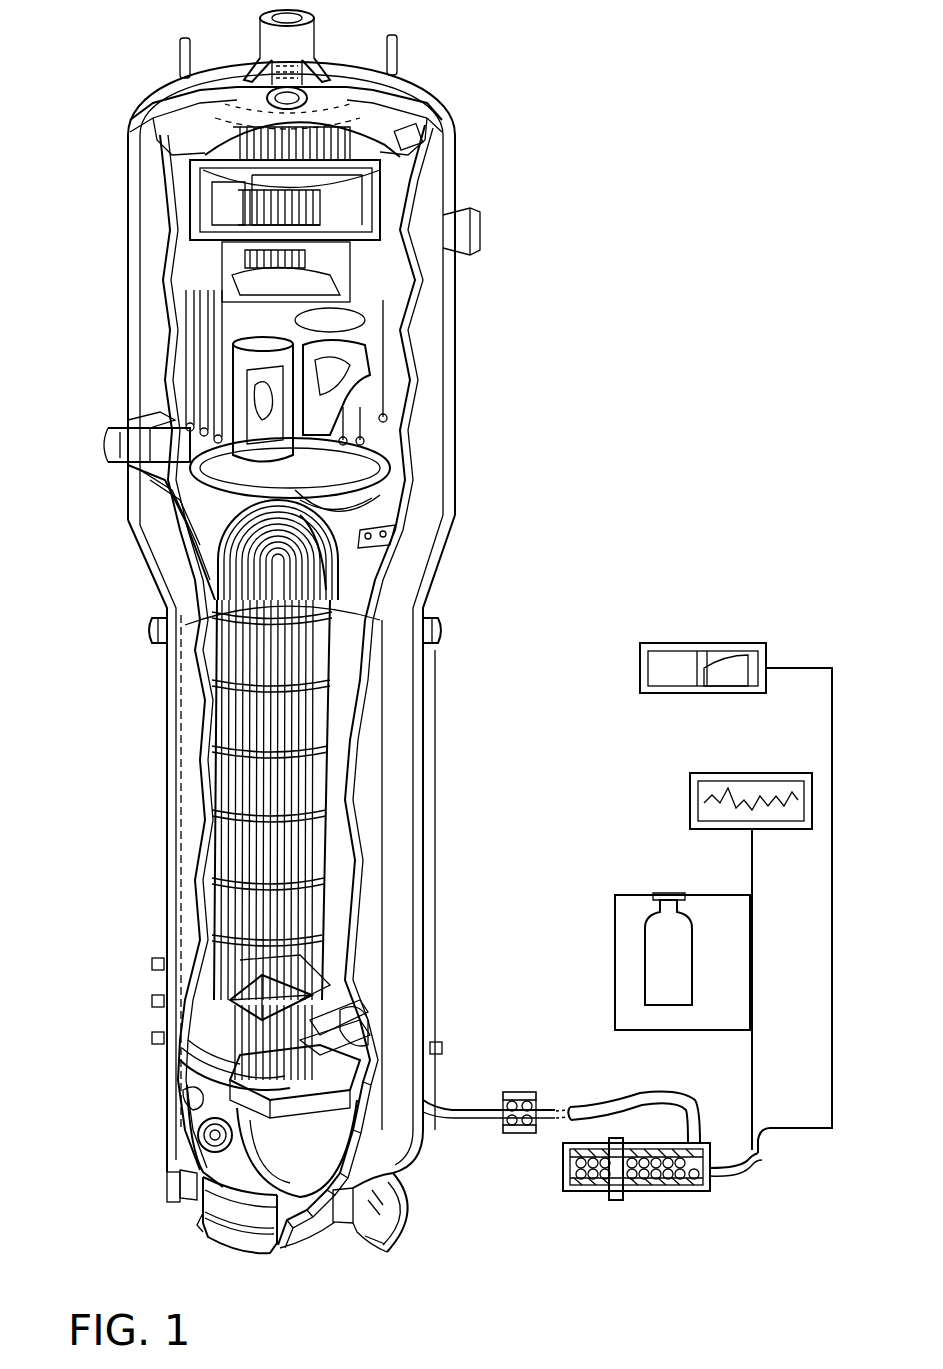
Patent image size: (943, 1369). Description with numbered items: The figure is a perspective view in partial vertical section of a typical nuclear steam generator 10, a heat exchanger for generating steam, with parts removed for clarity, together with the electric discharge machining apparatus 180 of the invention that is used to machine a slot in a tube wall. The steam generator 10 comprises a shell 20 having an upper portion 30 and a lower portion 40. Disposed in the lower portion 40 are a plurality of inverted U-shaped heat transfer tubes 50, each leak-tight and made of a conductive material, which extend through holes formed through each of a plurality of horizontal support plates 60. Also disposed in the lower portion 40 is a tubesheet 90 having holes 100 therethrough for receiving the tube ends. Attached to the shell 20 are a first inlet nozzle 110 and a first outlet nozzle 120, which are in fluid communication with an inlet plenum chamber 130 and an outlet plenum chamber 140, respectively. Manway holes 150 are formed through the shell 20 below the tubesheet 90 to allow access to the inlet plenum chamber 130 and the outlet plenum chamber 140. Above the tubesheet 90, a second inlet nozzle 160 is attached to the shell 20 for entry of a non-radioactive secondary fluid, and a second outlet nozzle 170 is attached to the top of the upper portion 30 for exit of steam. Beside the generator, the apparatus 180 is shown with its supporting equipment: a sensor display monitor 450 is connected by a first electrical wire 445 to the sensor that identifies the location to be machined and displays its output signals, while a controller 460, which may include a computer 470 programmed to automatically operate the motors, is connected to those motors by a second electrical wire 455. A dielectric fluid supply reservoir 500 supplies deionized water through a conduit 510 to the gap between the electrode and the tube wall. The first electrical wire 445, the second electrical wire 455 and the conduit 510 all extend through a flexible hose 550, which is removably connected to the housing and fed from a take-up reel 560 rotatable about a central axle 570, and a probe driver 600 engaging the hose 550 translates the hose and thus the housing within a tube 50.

The nuclear steam generator 10 is at (527, 92).
The shell 20 is at (438, 275).
The upper portion 30 is at (428, 412).
The lower portion 40 is at (395, 785).
The inverted U-shaped heat transfer tubes 50 is at (290, 922).
The horizontal support plates 60 is at (285, 880).
The tubesheet 90 is at (198, 1080).
The holes 100 is at (385, 1078).
The first inlet nozzle 110 is at (240, 1248).
The first outlet nozzle 120 is at (400, 1236).
The inlet plenum chamber 130 is at (200, 1085).
The outlet plenum chamber 140 is at (360, 1170).
The manway holes 150 is at (205, 1136).
The second inlet nozzle 160 is at (120, 430).
The second outlet nozzle 170 is at (262, 30).
The electric discharge machining apparatus 180 is at (557, 875).
The first electrical wire 445 is at (752, 870).
The sensor display monitor 450 is at (716, 773).
The second electrical wire 455 is at (832, 912).
The controller 460 is at (680, 643).
The computer 470 is at (705, 668).
The dielectric fluid supply reservoir 500 is at (680, 948).
The conduit 510 is at (612, 980).
The flexible hose 550 is at (612, 1098).
The take-up reel 560 is at (583, 1193).
The central axle 570 is at (616, 1200).
The probe driver 600 is at (522, 1092).